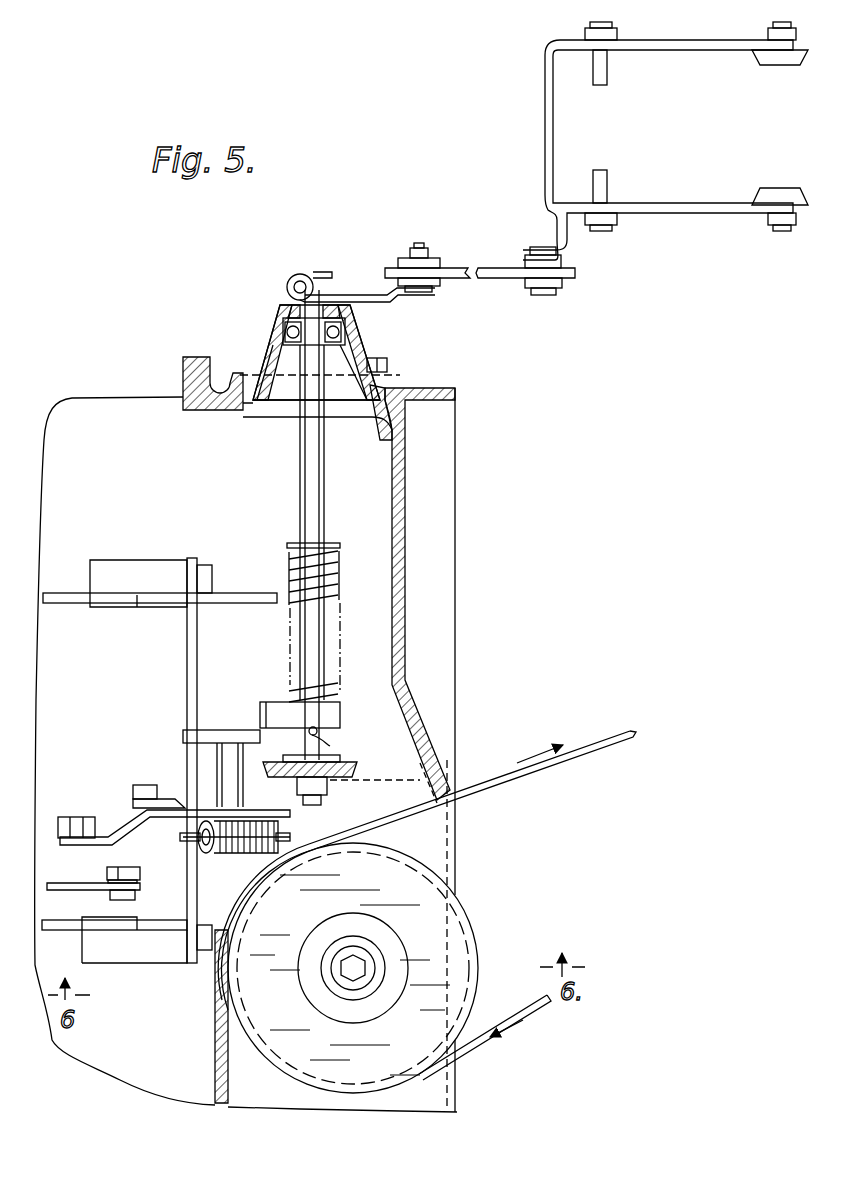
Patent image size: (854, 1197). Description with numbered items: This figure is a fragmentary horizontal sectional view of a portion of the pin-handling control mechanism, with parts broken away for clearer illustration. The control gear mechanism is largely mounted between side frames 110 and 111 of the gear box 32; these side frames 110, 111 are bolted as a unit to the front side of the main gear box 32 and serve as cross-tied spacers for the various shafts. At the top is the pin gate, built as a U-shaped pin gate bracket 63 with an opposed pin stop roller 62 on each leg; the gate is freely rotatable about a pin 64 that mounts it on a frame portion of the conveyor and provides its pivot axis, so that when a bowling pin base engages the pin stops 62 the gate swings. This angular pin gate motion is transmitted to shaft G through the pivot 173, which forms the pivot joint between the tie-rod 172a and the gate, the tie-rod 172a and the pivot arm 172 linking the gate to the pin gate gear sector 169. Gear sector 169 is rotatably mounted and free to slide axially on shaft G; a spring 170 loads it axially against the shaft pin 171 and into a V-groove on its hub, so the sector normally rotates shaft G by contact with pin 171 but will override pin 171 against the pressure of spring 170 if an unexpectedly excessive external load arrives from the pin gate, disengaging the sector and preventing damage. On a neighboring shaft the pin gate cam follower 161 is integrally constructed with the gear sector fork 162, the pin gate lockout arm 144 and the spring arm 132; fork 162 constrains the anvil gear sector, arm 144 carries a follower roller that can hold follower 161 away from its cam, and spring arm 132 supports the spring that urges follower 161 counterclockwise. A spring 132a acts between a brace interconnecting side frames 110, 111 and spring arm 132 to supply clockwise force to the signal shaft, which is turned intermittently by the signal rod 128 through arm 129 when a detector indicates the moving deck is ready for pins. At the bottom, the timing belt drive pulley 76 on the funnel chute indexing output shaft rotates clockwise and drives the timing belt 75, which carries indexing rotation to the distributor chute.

The gear box 32 is at (445, 492).
The shaft G is at (300, 457).
The spring 170 is at (340, 574).
The pin gate gear sector 169 is at (336, 716).
The shaft pin 171 is at (330, 742).
The pivot arm 172 is at (358, 292).
The tie-rod 172a is at (500, 268).
The pivot 173 is at (546, 295).
The pin gate bracket 63 is at (695, 212).
The pin 64 is at (603, 170).
The pin stops 62 is at (780, 188).
The side frame 110 is at (62, 595).
The gear sector fork 162 is at (225, 734).
The pin gate cam follower 161 is at (88, 822).
The pin gate lockout arm 144 is at (152, 790).
The spring 132a is at (220, 858).
The spring arm 132 is at (305, 830).
The arm 129 is at (108, 872).
The signal rod 128 is at (60, 885).
The side frame 111 is at (60, 928).
The timing belt drive pulley 76 is at (450, 935).
The timing belt 75 is at (574, 758).